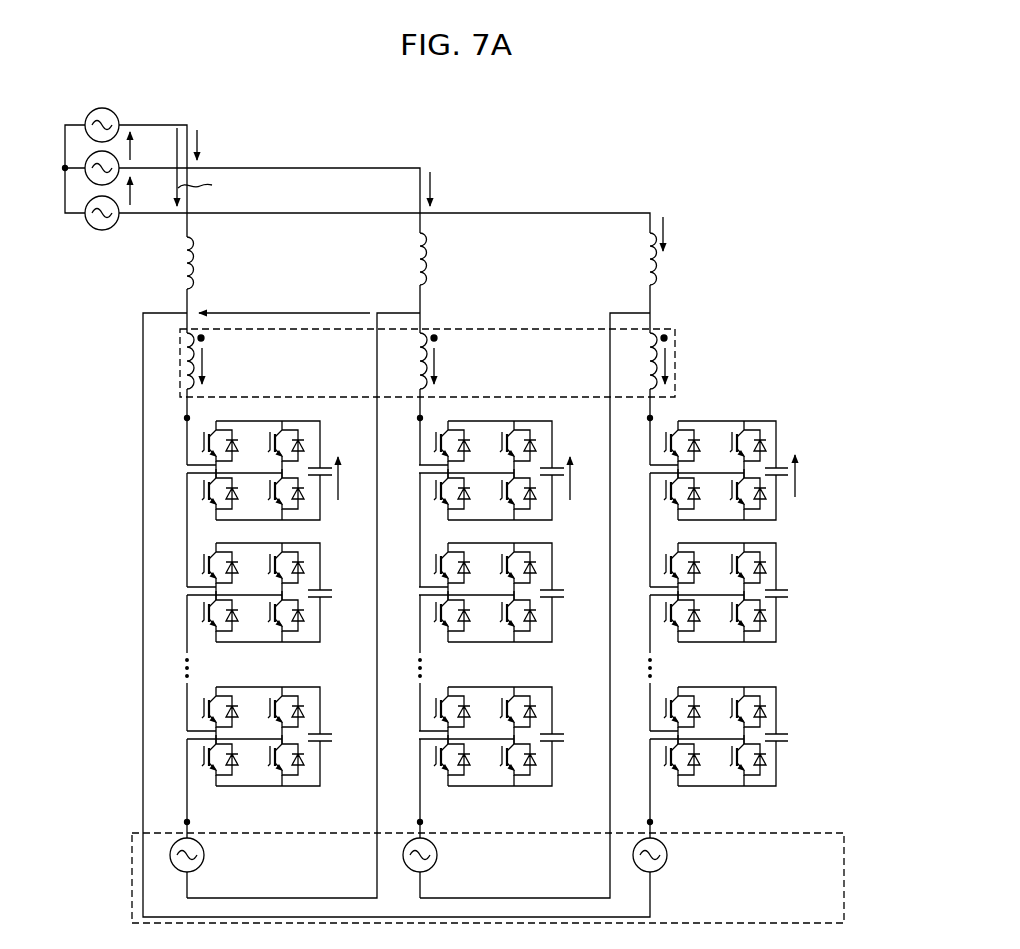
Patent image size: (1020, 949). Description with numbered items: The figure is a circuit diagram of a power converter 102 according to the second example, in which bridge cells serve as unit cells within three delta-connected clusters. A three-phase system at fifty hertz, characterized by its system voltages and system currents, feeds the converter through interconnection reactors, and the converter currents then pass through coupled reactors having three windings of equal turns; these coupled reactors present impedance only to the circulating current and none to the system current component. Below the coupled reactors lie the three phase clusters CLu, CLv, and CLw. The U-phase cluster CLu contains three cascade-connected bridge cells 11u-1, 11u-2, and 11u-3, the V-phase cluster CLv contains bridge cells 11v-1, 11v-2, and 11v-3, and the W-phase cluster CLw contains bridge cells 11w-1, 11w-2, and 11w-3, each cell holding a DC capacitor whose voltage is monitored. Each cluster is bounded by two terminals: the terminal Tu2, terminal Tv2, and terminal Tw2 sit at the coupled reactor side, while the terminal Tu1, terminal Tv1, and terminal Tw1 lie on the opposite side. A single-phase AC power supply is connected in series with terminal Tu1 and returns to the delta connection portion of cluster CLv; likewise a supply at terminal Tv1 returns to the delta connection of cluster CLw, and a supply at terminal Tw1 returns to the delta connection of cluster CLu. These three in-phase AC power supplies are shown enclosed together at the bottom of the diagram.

The power converter 102 is at (733, 138).
The bridge cell 11u-1 is at (331, 507).
The bridge cell 11u-2 is at (332, 623).
The bridge cell 11u-3 is at (332, 768).
The bridge cell 11v-1 is at (566, 507).
The bridge cell 11v-2 is at (566, 623).
The bridge cell 11v-3 is at (566, 768).
The bridge cell 11w-1 is at (792, 506).
The bridge cell 11w-2 is at (792, 623).
The bridge cell 11w-3 is at (792, 765).
The cluster CLu is at (152, 627).
The cluster CLv is at (520, 404).
The cluster CLw is at (730, 399).
The terminal Tu1 is at (168, 822).
The terminal Tu2 is at (168, 418).
The terminal Tv1 is at (401, 822).
The terminal Tv2 is at (401, 418).
The terminal Tw1 is at (632, 822).
The terminal Tw2 is at (632, 418).